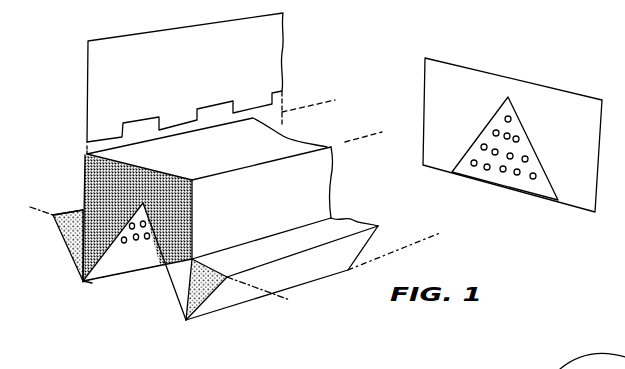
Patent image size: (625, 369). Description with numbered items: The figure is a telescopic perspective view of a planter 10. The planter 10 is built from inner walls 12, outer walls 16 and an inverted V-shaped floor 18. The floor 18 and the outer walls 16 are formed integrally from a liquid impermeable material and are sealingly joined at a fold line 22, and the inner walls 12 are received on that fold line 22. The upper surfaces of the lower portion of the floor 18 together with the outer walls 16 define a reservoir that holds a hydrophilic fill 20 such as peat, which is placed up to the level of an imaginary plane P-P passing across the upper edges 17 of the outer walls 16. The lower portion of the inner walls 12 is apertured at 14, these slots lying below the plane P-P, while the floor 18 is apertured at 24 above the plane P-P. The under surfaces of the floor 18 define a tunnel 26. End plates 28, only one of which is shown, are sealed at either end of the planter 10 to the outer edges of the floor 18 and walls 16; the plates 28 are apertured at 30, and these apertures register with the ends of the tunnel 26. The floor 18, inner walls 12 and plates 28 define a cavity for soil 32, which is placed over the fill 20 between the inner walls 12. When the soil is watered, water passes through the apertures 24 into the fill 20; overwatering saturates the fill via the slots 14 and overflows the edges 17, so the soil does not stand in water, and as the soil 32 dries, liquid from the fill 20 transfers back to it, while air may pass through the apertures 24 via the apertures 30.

The planter 10 is at (89, 329).
The inner walls 12 is at (190, 79).
The apertures 14 is at (130, 128).
The outer walls 16 is at (62, 242).
The upper edges 17 is at (79, 211).
The inverted V-shaped floor 18 is at (91, 282).
The hydrophilic fill 20 is at (337, 225).
The fold line 22 is at (103, 284).
The apertures 24 is at (124, 244).
The tunnel 26 is at (147, 262).
The end plates 28 is at (583, 95).
The apertures 30 is at (522, 180).
The soil 32 is at (225, 163).